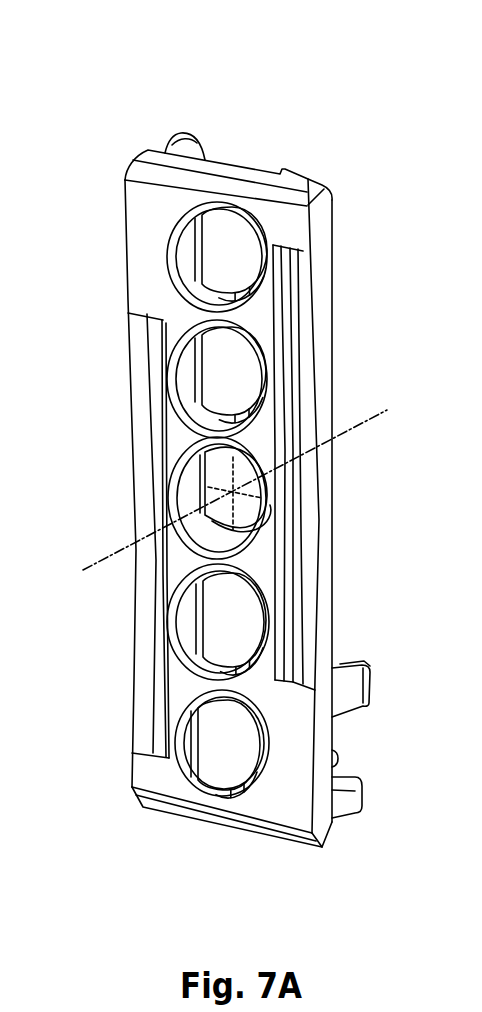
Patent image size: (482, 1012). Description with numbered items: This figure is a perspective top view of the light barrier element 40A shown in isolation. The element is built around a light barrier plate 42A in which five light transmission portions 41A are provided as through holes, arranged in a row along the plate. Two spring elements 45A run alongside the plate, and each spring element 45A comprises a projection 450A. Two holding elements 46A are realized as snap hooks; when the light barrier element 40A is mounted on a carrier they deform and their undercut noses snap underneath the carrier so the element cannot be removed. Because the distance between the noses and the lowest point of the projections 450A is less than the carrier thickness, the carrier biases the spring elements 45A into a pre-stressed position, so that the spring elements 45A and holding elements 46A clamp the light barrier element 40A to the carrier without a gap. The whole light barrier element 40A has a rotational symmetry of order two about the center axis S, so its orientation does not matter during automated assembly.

The light barrier element 40A is at (325, 158).
The light transmission portions 41A is at (233, 233).
The light barrier plate 42A is at (250, 323).
The projection 450A is at (333, 434).
The spring elements 45A is at (143, 476).
The holding elements 46A is at (348, 668).
The center axis S is at (238, 509).